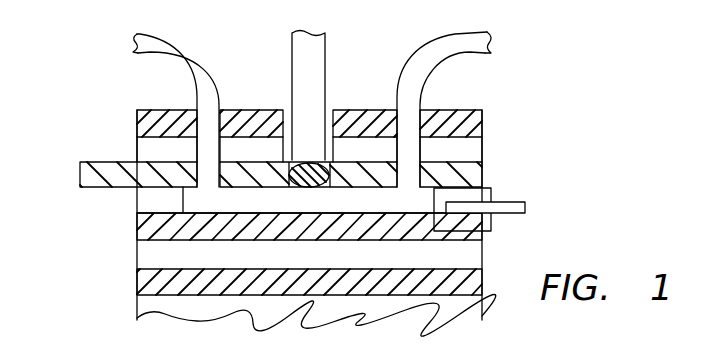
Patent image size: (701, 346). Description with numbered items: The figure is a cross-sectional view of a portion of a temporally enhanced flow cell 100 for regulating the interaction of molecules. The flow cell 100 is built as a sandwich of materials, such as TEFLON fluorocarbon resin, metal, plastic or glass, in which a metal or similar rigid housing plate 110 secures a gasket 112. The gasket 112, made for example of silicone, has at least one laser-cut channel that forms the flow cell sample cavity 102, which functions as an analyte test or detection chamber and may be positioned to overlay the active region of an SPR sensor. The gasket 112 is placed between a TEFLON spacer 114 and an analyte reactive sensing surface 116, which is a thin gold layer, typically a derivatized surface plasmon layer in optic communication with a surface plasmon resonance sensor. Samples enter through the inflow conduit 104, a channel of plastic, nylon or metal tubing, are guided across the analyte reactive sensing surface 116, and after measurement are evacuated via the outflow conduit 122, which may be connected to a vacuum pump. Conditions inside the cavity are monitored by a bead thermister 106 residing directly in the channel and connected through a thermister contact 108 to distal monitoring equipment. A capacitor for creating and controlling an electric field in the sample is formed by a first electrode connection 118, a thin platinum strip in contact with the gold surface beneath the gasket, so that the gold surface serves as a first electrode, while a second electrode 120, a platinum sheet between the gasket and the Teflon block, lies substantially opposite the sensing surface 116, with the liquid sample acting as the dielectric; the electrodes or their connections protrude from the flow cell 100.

The flow cell 100 is at (584, 143).
The flow cell sample cavity 102 is at (433, 188).
The inflow conduit 104 is at (135, 43).
The bead thermister 106 is at (306, 160).
The thermister contact 108 is at (292, 64).
The housing plate 110 is at (136, 120).
The gasket 112 is at (137, 200).
The TEFLON spacer 114 is at (136, 150).
The analyte reactive sensing surface 116 is at (137, 228).
The first electrode connection 118 is at (525, 207).
The second electrode 120 is at (80, 175).
The outflow conduit 122 is at (490, 46).